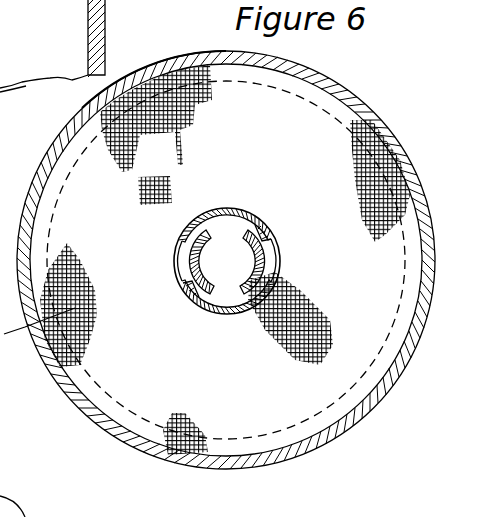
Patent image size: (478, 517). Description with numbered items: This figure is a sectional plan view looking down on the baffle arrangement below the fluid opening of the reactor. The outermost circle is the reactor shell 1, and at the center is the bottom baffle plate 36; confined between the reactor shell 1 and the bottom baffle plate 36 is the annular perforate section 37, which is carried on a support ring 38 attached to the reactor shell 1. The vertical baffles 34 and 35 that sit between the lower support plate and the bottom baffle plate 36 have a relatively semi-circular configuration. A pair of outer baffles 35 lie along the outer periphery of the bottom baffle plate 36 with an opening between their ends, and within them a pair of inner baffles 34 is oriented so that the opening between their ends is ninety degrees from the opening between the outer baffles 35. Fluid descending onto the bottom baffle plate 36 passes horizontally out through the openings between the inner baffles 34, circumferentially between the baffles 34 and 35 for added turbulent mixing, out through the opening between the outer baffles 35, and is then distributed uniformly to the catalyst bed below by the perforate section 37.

The reactor shell 1 is at (363, 417).
The inner baffles 34 is at (192, 257).
The outer baffles 35 is at (243, 212).
The bottom baffle plate 36 is at (175, 247).
The annular perforate section 37 is at (58, 2).
The support ring 38 is at (393, 321).